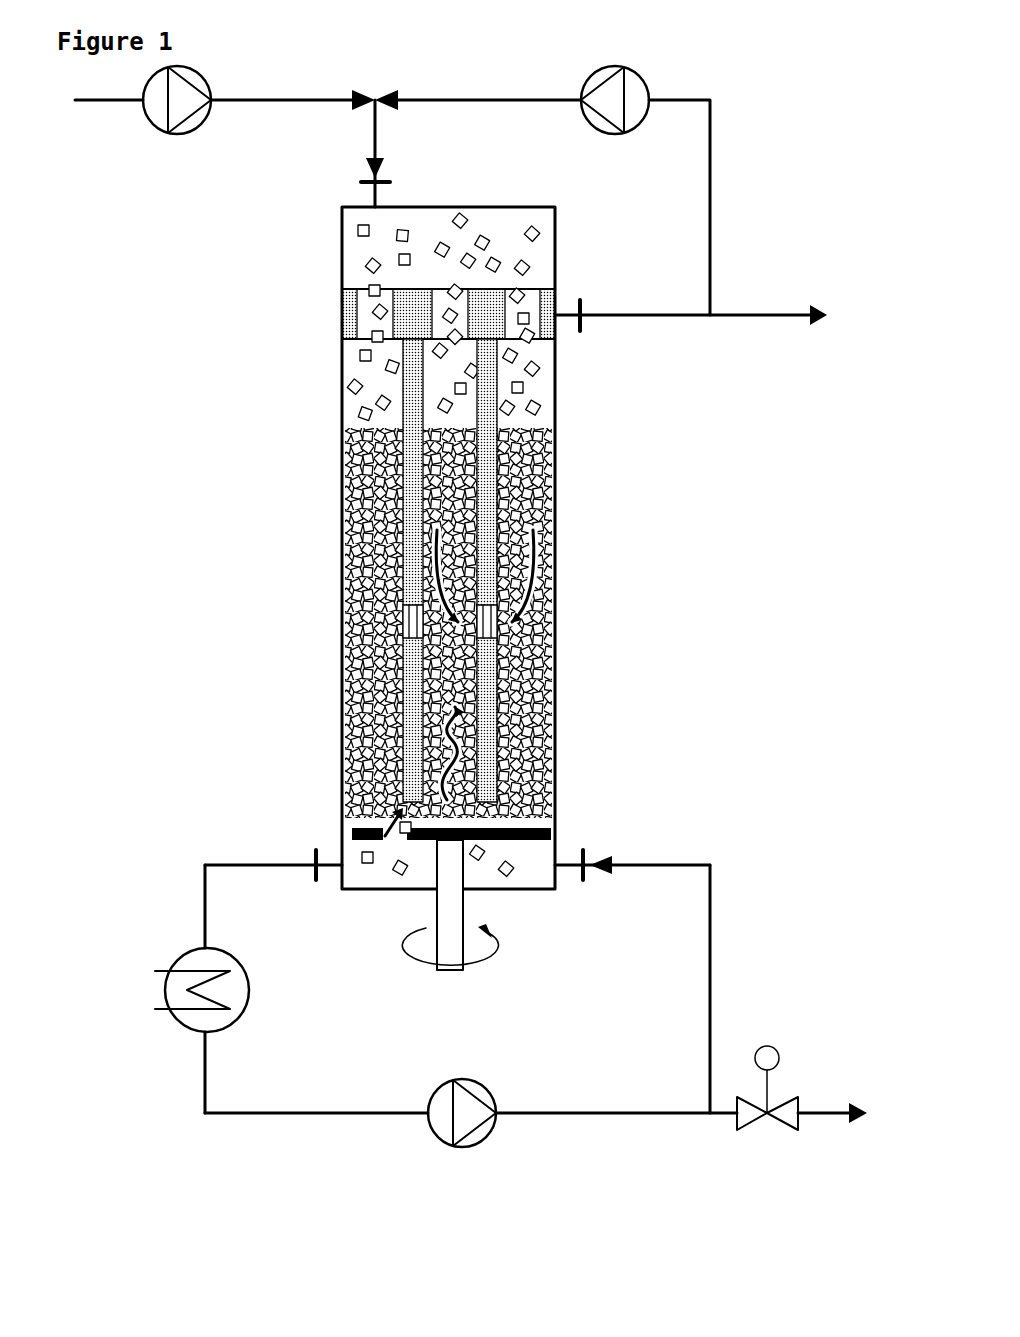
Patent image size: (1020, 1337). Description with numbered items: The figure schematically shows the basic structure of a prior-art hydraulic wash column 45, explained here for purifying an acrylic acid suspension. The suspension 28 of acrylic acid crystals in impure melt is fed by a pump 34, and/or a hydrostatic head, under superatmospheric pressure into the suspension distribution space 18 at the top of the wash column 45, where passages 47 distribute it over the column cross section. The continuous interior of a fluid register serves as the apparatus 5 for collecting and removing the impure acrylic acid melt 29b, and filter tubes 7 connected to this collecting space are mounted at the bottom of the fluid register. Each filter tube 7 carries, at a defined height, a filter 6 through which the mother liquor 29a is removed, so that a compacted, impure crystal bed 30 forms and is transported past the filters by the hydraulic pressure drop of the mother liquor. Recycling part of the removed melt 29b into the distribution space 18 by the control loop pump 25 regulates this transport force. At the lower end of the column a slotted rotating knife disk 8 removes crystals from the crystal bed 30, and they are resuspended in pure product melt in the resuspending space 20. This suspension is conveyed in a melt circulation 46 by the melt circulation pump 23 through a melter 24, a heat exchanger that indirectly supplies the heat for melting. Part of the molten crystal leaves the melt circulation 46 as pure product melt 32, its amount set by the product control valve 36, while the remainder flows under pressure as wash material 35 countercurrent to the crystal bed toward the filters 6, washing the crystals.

The apparatus for collecting and removing impure acrylic acid melt 5 is at (415, 318).
The filter 6 is at (413, 623).
The filter tubes 7 is at (412, 528).
The slotted rotating knife disk 8 is at (345, 828).
The suspension distribution space 18 is at (363, 253).
The resuspending space 20 is at (530, 866).
The melt circulation pump 23 is at (450, 1127).
The melter 24 is at (193, 958).
The control loop pump 25 is at (618, 117).
The suspension 28 is at (91, 101).
The mother liquor 29a is at (545, 588).
The impure acrylic acid melt 29b is at (721, 215).
The crystal bed 30 is at (522, 508).
The pure product melt 32 is at (852, 1113).
The pump 34 is at (163, 117).
The wash material 35 is at (555, 778).
The product control valve 36 is at (748, 1115).
The wash column 45 is at (559, 551).
The melt circulation 46 is at (710, 968).
The passages 47 is at (370, 310).